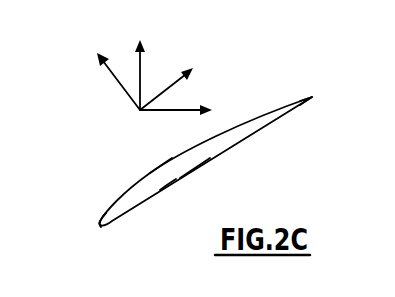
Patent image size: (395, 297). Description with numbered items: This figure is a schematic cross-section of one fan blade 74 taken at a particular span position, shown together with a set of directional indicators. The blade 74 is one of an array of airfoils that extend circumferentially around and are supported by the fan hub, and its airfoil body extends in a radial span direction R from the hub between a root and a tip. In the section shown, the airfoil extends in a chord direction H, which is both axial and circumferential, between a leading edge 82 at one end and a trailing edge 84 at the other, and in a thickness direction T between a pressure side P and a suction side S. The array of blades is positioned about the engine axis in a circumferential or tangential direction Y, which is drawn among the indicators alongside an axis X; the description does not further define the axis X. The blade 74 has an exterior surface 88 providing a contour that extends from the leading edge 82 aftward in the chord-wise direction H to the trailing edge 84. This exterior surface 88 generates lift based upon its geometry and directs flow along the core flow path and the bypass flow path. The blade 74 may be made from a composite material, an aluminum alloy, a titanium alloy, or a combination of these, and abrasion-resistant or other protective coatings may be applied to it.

The fan blade 74 is at (266, 89).
The leading edge 82 is at (100, 225).
The trailing edge 84 is at (313, 97).
The exterior surface 88 is at (197, 172).
The suction side S is at (167, 163).
The pressure side P is at (167, 184).
The X axis (chordwise) X is at (167, 111).
The circumferential or tangential direction Y is at (142, 65).
The thickness direction T is at (112, 77).
The chord direction H is at (182, 77).
The radial span direction R is at (140, 112).